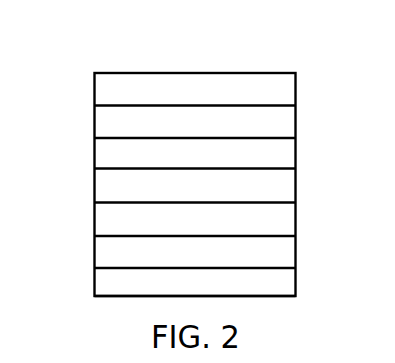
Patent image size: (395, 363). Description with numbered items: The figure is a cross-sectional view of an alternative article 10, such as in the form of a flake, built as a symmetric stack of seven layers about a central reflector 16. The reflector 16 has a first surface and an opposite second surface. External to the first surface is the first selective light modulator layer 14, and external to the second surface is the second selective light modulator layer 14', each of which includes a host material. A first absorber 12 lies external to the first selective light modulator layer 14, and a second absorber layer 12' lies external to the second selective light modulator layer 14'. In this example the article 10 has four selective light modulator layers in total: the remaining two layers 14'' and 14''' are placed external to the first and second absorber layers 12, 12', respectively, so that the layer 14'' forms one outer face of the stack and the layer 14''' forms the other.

The article 10 is at (150, 62).
The selective light modulator layer 14''' is at (168, 93).
The second absorber layer 12' is at (168, 125).
The second selective light modulator layer 14' is at (168, 156).
The reflector 16 is at (94, 183).
The first selective light modulator layer 14 is at (169, 221).
The first absorber 12 is at (169, 255).
The selective light modulator layer 14'' is at (169, 286).